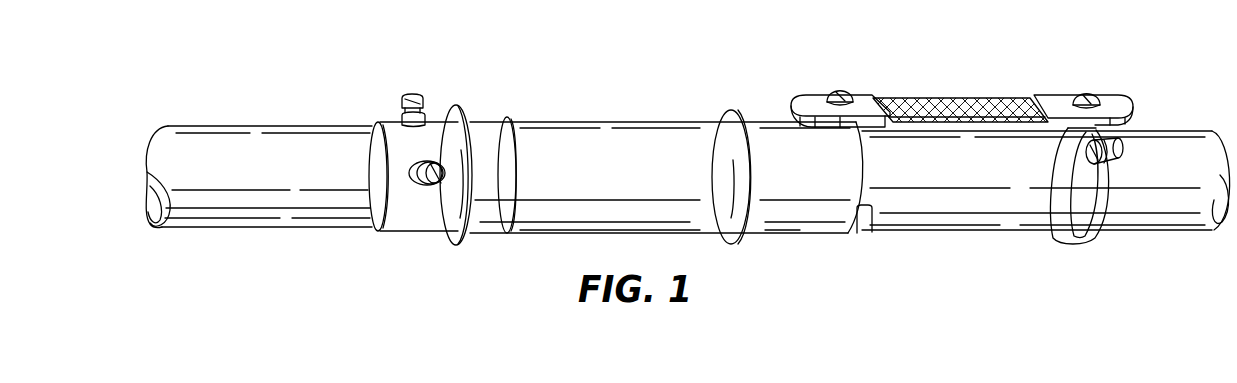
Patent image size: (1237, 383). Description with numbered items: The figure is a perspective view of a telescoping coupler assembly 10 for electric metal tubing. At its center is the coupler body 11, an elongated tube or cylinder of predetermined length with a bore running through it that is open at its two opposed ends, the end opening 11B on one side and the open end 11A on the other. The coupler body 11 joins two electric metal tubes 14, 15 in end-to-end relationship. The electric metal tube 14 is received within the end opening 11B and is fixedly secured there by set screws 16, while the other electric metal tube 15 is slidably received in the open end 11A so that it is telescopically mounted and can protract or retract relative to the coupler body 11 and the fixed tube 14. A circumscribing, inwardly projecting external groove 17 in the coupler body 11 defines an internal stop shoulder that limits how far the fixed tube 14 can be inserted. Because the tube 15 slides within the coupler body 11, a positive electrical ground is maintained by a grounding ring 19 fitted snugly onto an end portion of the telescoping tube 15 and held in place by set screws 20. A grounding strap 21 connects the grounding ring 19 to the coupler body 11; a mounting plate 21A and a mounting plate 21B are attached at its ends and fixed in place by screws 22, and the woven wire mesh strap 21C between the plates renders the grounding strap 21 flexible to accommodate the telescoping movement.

The telescoping coupler assembly 10 is at (948, 65).
The coupler body 11 is at (600, 116).
The open end 11A is at (869, 210).
The end opening 11B is at (380, 200).
The electric metal tube 14 is at (247, 143).
The electric metal tube 15 is at (1138, 205).
The set screws 16 is at (411, 93).
The external groove 17 is at (500, 122).
The grounding ring 19 is at (1085, 228).
The set screws 20 is at (1120, 148).
The grounding strap 21 is at (1000, 90).
The mounting plate 21A is at (1110, 104).
The mounting plate 21B is at (803, 102).
The woven wire mesh strap 21C is at (935, 110).
The screws 22 is at (840, 88).